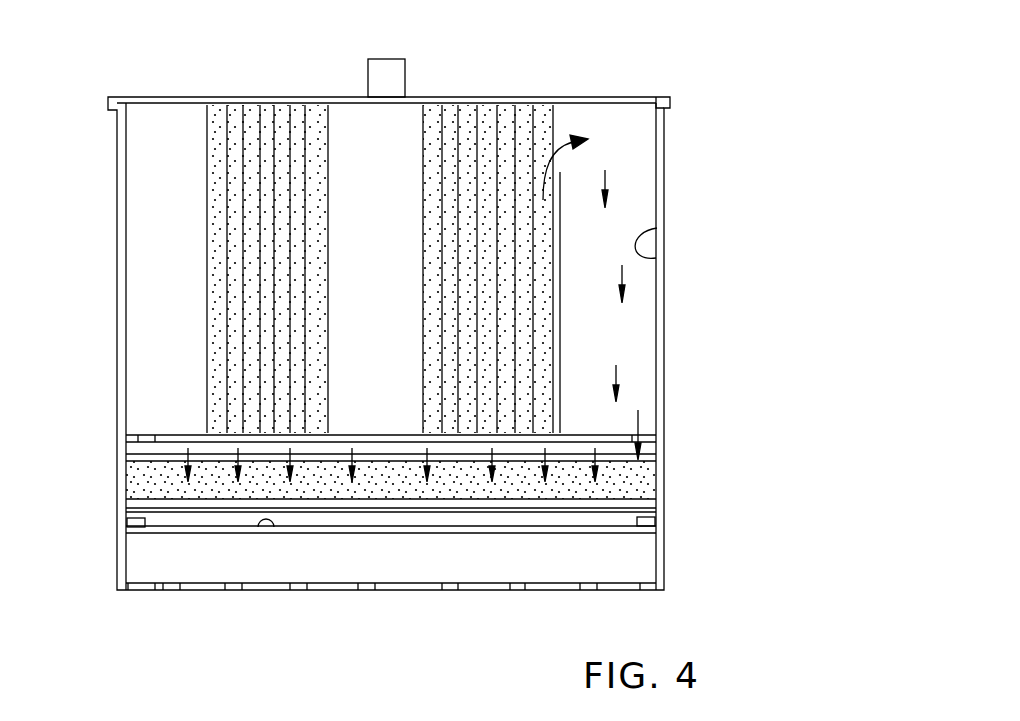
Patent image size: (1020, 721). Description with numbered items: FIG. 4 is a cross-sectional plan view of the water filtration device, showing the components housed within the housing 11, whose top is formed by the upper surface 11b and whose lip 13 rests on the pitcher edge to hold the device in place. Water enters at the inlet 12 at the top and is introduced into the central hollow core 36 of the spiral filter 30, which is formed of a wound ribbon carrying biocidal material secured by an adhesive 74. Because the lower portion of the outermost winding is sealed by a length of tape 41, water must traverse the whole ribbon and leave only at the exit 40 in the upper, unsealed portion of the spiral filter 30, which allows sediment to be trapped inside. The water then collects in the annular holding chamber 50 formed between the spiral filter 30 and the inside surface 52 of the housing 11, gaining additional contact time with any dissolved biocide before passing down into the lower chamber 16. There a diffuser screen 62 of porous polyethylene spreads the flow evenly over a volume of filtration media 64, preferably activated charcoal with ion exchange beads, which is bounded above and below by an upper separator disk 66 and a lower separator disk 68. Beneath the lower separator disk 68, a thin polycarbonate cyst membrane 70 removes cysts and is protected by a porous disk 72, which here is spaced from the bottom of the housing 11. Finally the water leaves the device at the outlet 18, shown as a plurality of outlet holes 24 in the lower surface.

The housing 11 is at (665, 302).
The upper surface 11b is at (590, 97).
The inlet 12 is at (388, 65).
The lip 13 is at (670, 99).
The lower chamber 16 is at (394, 540).
The outlet 18 is at (515, 590).
The outlet holes 24 is at (368, 590).
The spiral filter 30 is at (557, 363).
The central hollow core 36 is at (390, 263).
The exit 40 is at (540, 147).
The tape 41 is at (562, 283).
The annular holding chamber 50 is at (143, 225).
The inside surface 52 is at (657, 230).
The diffuser screen 62 is at (135, 451).
The filtration media 64 is at (133, 478).
The upper separator disk 66 is at (648, 457).
The lower separator disk 68 is at (650, 508).
The cyst membrane 70 is at (274, 527).
The porous disk 72 is at (165, 543).
The adhesive 74 is at (130, 525).